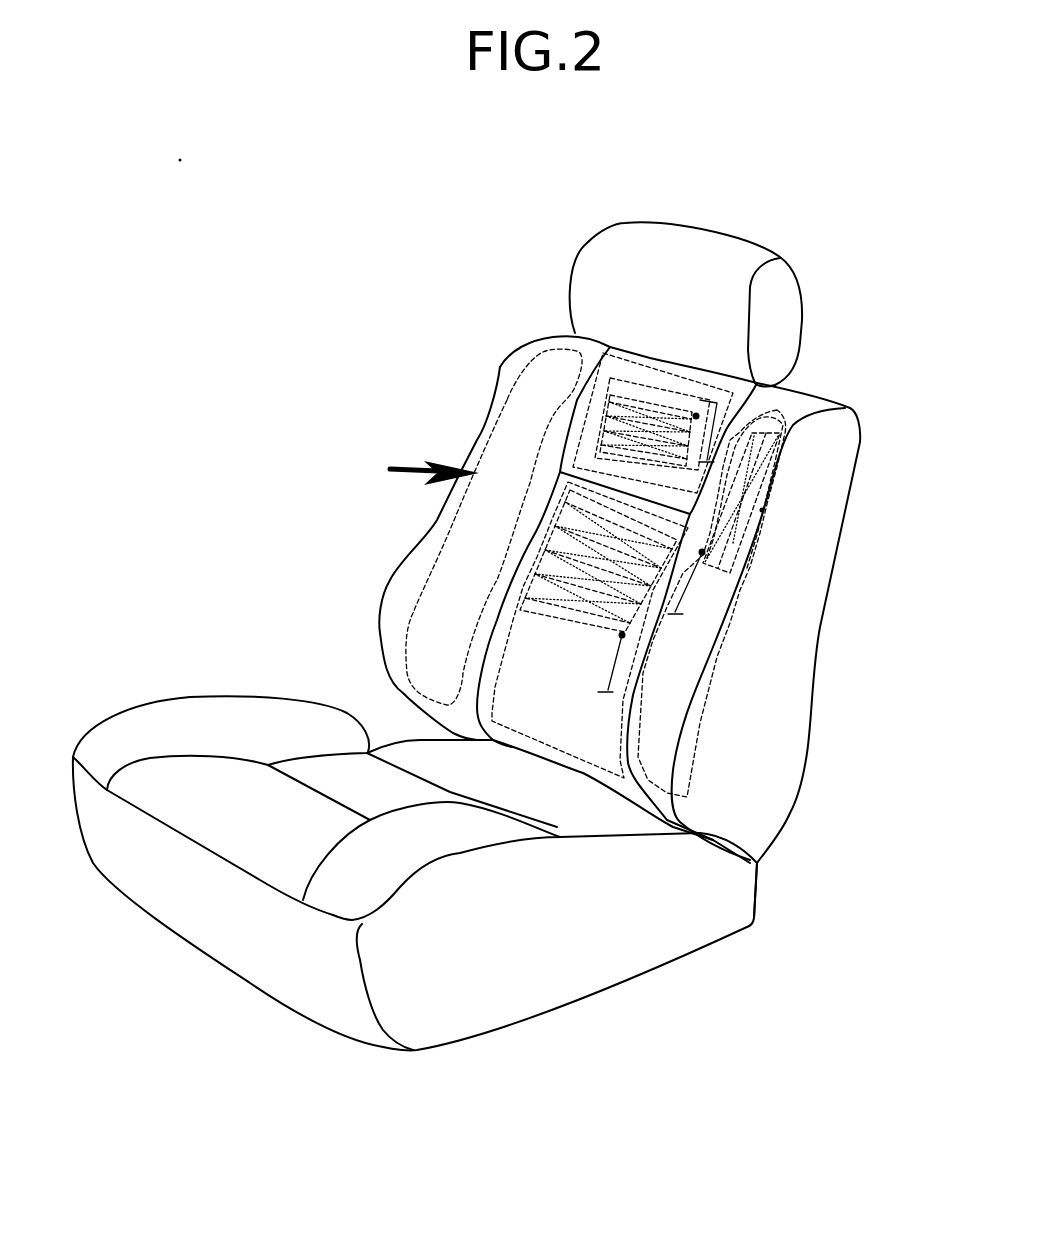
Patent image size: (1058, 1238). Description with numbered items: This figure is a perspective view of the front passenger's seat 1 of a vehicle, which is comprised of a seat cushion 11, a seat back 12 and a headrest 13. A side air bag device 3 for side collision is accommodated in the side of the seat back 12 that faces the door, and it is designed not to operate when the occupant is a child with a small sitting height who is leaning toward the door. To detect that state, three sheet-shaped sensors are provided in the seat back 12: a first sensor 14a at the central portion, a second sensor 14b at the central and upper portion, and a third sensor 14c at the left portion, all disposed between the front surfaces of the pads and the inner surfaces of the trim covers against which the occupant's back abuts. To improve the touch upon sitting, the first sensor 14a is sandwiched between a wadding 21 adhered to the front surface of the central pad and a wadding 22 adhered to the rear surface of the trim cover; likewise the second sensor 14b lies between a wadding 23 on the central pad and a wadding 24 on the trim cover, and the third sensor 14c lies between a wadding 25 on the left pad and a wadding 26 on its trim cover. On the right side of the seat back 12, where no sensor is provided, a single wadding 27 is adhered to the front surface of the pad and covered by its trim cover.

The front passenger's seat 1 is at (328, 600).
The side air bag device 3 is at (410, 469).
The seat cushion 11 is at (187, 690).
The seat back 12 is at (830, 640).
The headrest 13 is at (727, 227).
The first sensor 14a is at (577, 636).
The second sensor 14b is at (637, 384).
The third sensor 14c is at (724, 597).
The wadding 21 is at (590, 690).
The wadding 22 is at (593, 752).
The wadding 23 is at (751, 396).
The wadding 24 is at (687, 360).
The wadding 25 is at (779, 625).
The wadding 26 is at (687, 727).
The wadding 27 is at (507, 437).